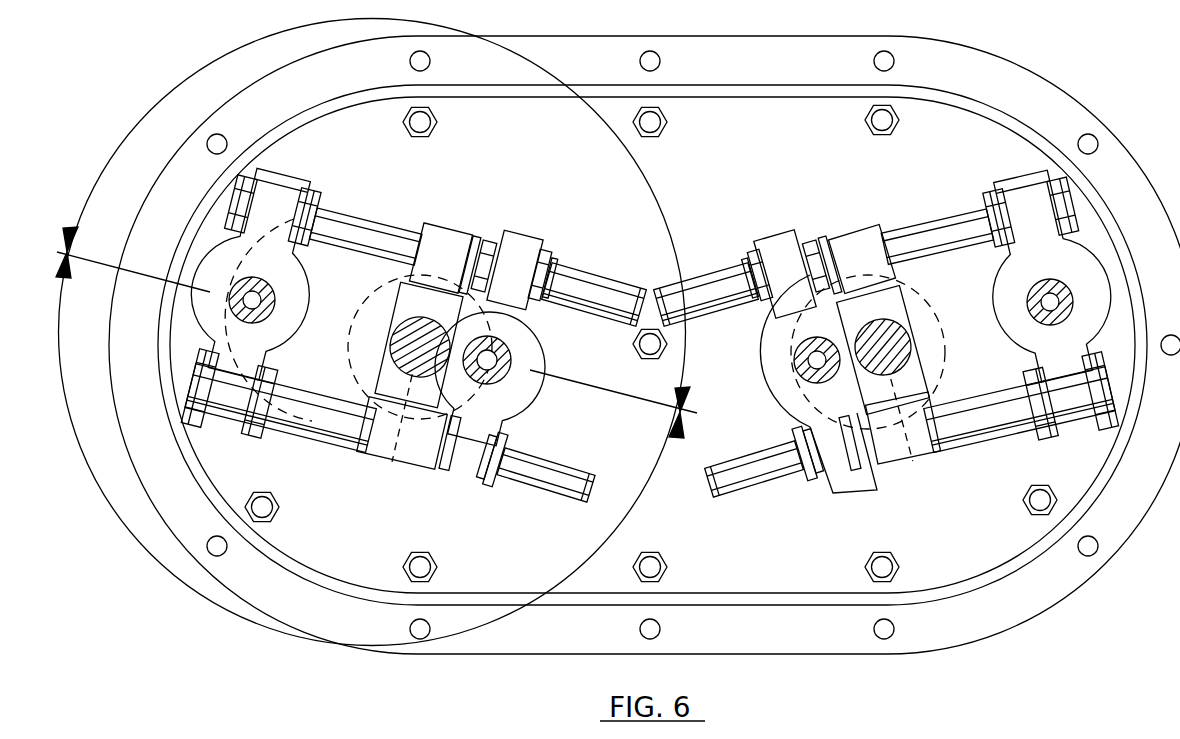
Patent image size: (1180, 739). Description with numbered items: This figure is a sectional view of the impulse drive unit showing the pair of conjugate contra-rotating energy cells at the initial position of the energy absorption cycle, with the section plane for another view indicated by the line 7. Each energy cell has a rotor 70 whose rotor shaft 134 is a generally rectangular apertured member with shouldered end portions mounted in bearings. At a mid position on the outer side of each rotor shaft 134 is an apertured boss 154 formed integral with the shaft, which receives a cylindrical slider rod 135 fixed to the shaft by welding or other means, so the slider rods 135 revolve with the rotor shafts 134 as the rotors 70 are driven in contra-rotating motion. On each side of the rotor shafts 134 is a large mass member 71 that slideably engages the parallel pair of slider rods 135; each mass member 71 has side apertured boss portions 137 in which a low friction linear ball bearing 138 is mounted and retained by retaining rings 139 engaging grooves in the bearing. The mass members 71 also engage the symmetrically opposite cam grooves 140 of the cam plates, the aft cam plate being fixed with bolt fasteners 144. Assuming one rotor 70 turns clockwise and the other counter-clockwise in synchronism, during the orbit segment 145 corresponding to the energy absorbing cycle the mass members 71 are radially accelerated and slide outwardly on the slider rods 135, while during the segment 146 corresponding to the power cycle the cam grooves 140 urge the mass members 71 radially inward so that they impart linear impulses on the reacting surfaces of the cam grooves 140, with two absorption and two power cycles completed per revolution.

The section line 7- 7 is at (151, 335).
The rotor 70 is at (868, 235).
The mass member 71 is at (313, 284).
The rotor shaft 134 is at (345, 448).
The slider rod 135 is at (612, 320).
The side apertured boss portion 137 is at (289, 178).
The linear ball bearing 138 is at (550, 265).
The retaining ring 139 is at (492, 232).
The cam groove 140 is at (298, 358).
The bolt fastener 144 is at (653, 136).
The energy absorbing cycle segment 145 is at (465, 634).
The power cycle segment 146 is at (665, 214).
The apertured boss 154 is at (385, 470).